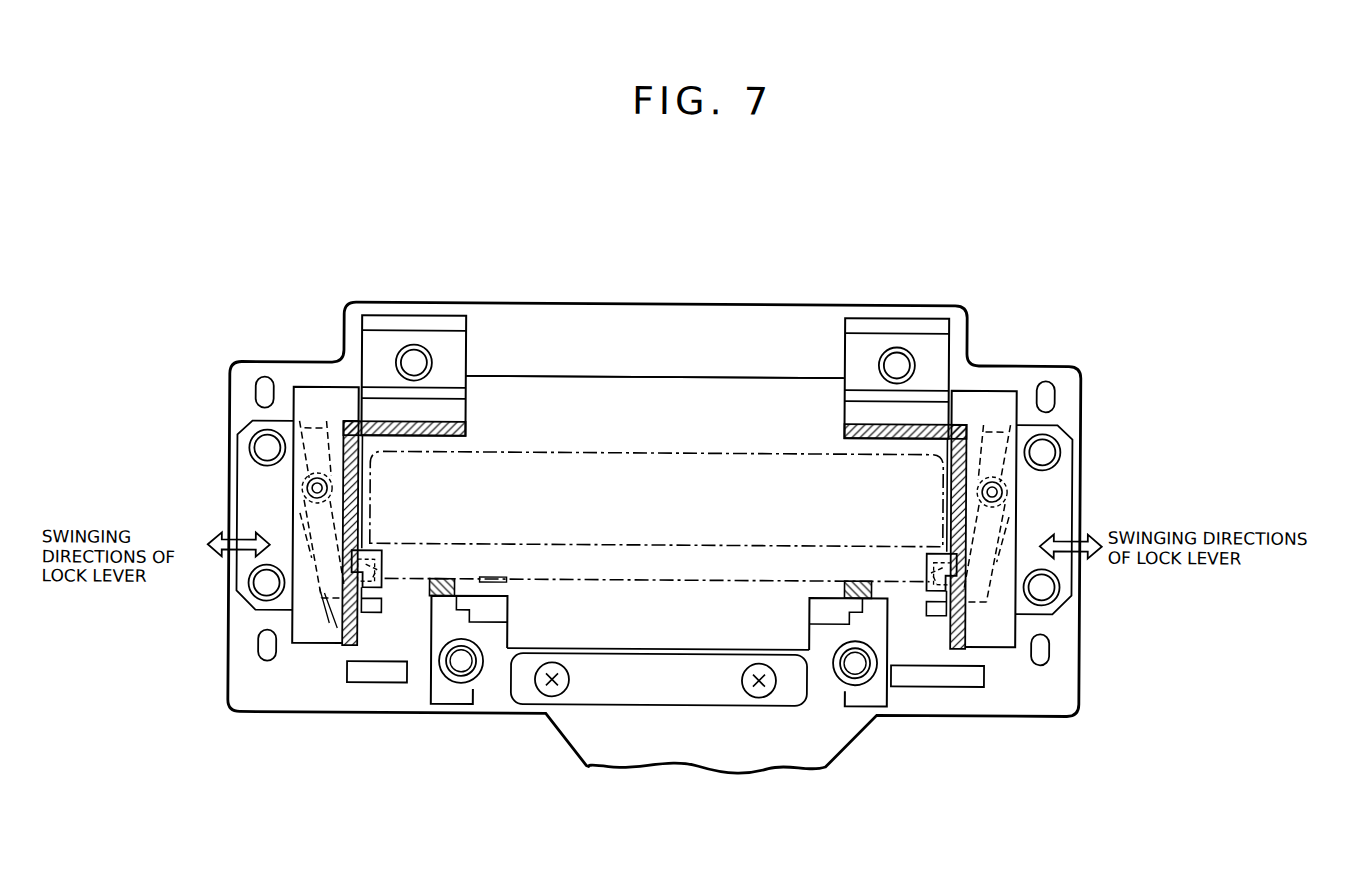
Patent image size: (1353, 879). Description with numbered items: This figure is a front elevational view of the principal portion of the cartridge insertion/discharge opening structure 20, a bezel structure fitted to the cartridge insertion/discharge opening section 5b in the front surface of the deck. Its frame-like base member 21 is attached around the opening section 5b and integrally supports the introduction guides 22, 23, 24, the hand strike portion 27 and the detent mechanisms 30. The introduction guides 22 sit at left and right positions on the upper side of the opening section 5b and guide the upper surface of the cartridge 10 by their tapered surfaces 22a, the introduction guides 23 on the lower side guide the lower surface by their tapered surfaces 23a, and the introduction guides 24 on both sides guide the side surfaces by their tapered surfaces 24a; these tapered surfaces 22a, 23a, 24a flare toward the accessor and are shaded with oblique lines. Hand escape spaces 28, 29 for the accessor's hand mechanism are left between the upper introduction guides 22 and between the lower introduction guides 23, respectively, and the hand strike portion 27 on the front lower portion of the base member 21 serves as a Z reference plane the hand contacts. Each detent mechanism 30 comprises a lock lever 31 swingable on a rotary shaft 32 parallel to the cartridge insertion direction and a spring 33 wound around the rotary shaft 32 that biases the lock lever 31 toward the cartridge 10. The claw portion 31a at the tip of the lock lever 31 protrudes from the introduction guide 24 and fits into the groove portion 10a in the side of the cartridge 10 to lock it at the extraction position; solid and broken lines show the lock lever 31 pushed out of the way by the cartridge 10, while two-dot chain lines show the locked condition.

The cartridge insertion/discharge opening structure 20 is at (642, 300).
The base member 21 is at (547, 323).
The introduction guide 22 is at (456, 345).
The tapered surface 22a is at (462, 428).
The introduction guide 24 is at (343, 407).
The tapered surface 24a is at (360, 460).
The spring 33 is at (330, 430).
The cartridge insertion/discharge opening section 5b is at (675, 391).
The cartridge 10 is at (738, 453).
The hand escape space 28 is at (620, 403).
The rotary shaft 32 is at (303, 491).
The lock lever 31 is at (300, 518).
The groove portion 10a is at (383, 543).
The claw portion 31a is at (377, 571).
The tapered surface 23a is at (453, 580).
The detent mechanism 30 is at (330, 612).
The introduction guide 23 is at (433, 642).
The hand strike portion 27 is at (592, 693).
The hand escape space 29 is at (660, 630).